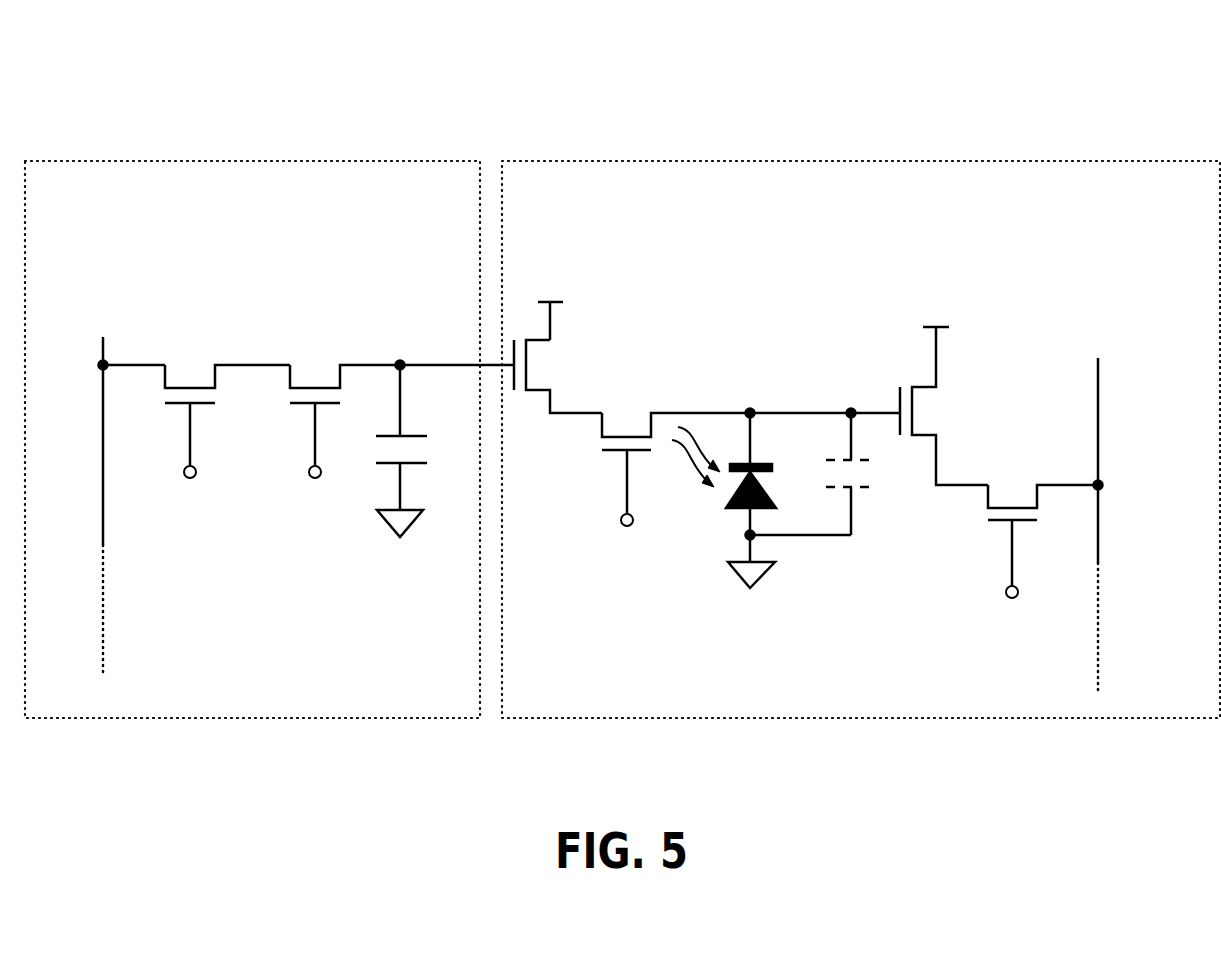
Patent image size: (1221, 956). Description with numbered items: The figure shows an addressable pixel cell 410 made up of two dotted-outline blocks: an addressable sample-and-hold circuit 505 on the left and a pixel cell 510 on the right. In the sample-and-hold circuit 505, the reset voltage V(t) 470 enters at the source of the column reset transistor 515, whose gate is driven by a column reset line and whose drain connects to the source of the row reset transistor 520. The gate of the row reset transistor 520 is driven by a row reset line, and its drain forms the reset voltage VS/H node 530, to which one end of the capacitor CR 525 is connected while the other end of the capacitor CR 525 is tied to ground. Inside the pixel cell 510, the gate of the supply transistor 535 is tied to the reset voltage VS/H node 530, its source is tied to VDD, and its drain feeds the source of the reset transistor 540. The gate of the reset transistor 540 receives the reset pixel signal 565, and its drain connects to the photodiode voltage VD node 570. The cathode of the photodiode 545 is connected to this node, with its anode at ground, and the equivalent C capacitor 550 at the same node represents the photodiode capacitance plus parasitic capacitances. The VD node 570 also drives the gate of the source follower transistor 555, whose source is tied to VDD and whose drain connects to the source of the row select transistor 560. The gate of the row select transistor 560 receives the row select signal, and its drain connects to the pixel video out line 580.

The addressable pixel cell 410 is at (531, 72).
The addressable sample-and-hold circuit 505 is at (316, 161).
The pixel cell 510 is at (926, 161).
The M4 transistor 515 is at (216, 441).
The M5 transistor 520 is at (341, 427).
The capacitor CR 525 is at (419, 455).
The reset voltage VS/H node 530 is at (437, 296).
The M6 transistor 535 is at (564, 342).
The M1 transistor 540 is at (676, 442).
The photodiode 545 is at (740, 500).
The equivalent C capacitor 550 is at (835, 485).
The M2 transistor 555 is at (947, 390).
The M3 transistor 560 is at (1035, 560).
The reset pixel signal 565 is at (630, 575).
The photodiode voltage VD node 570 is at (769, 357).
The pixel video out line 580 is at (1137, 525).
The reset voltage V(t) 470 is at (128, 519).